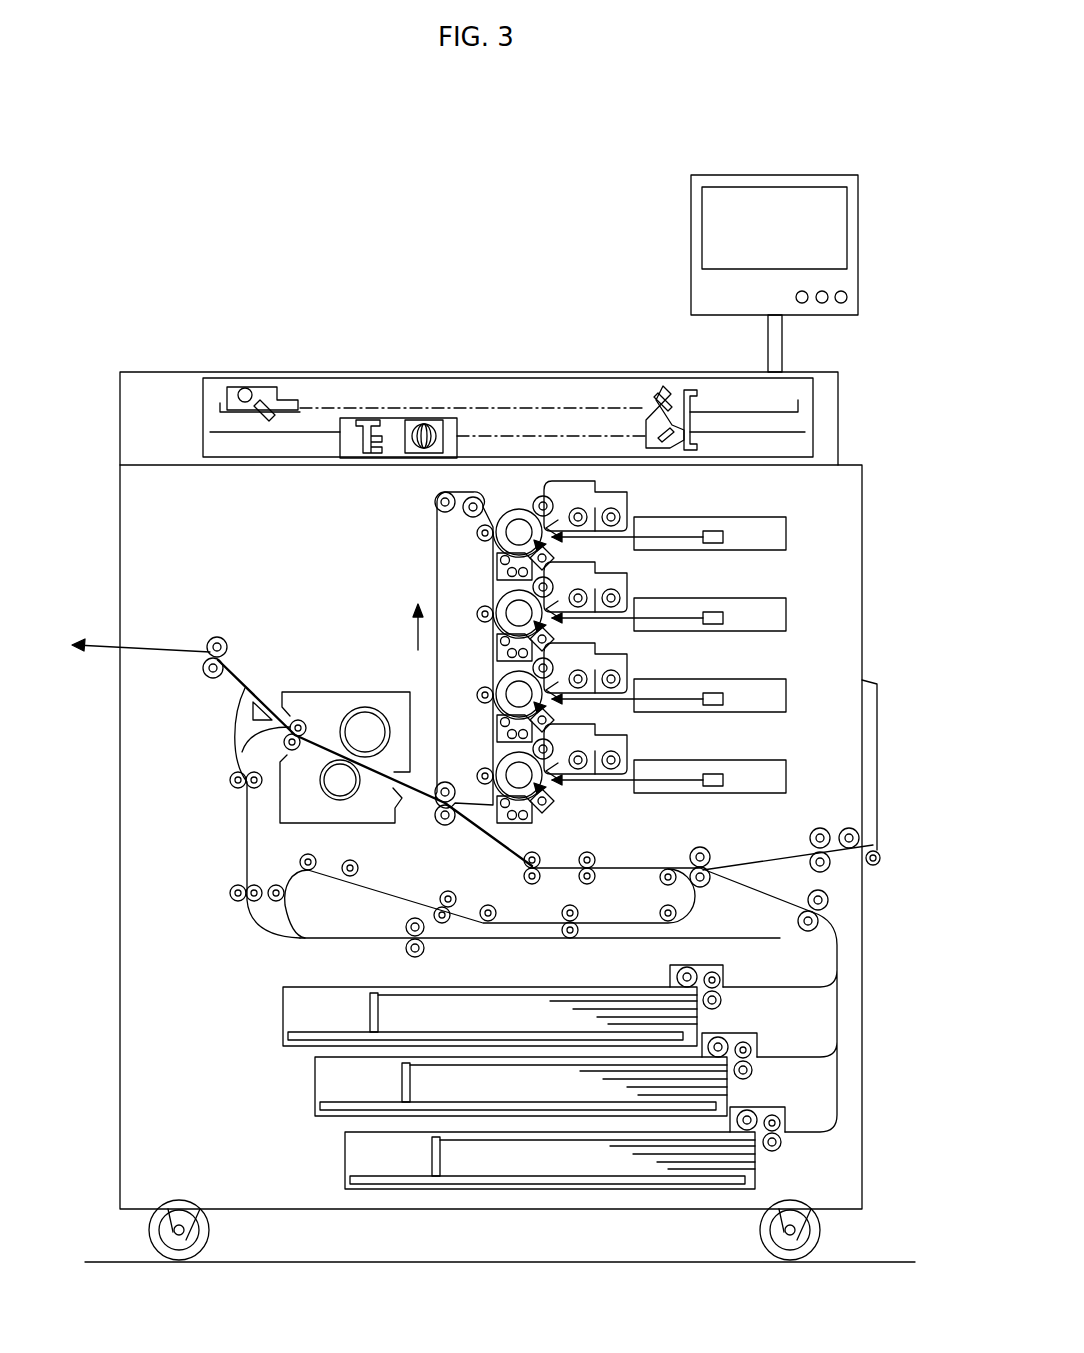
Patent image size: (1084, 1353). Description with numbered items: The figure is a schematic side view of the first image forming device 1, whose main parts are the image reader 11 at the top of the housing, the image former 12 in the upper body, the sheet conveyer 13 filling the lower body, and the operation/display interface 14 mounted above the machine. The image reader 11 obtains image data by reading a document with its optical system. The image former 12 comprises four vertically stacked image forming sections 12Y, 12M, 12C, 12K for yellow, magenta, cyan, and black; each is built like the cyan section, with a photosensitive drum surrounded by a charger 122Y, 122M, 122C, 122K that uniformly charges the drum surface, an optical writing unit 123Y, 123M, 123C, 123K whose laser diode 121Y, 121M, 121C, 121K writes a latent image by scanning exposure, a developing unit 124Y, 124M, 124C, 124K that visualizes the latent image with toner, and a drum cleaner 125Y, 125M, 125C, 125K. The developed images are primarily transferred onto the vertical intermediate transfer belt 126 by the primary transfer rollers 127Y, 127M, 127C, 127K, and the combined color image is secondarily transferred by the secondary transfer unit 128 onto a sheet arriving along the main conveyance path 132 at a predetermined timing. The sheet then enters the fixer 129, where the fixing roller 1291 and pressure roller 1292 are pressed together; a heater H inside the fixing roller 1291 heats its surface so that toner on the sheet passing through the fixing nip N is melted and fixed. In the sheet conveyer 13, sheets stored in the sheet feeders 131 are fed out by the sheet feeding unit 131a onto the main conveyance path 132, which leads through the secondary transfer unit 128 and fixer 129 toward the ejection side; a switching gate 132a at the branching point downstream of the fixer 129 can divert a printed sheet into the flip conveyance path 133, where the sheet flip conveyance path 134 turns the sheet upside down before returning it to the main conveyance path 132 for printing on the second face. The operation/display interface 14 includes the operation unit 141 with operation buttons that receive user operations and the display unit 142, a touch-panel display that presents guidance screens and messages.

The first image forming device 1 is at (597, 134).
The image reader 11 is at (813, 421).
The image former 12 is at (890, 513).
The image forming section 12Y is at (622, 512).
The image forming section 12M is at (620, 602).
The image forming section 12C is at (618, 686).
The image forming section 12K is at (646, 787).
The laser diode 121Y is at (724, 540).
The laser diode 121M is at (713, 608).
The laser diode 121C is at (711, 689).
The laser diode 121K is at (711, 770).
The charger 122Y is at (552, 558).
The charger 122M is at (587, 632).
The charger 122C is at (585, 713).
The charger 122K is at (585, 794).
The optical writing unit 123Y is at (776, 517).
The optical writing unit 123M is at (754, 599).
The optical writing unit 123C is at (752, 680).
The optical writing unit 123K is at (752, 761).
The developing unit 124Y is at (598, 492).
The developing unit 124M is at (619, 580).
The developing unit 124C is at (617, 661).
The developing unit 124K is at (617, 742).
The drum cleaner 125Y is at (505, 560).
The drum cleaner 125M is at (450, 635).
The drum cleaner 125C is at (450, 701).
The drum cleaner 125K is at (477, 830).
The intermediate transfer belt 126 is at (437, 548).
The primary transfer roller 127Y is at (515, 522).
The primary transfer roller 127M is at (510, 526).
The primary transfer roller 127C is at (461, 678).
The primary transfer roller 127K is at (554, 798).
The secondary transfer unit 128 is at (438, 822).
The fixer 129 is at (332, 731).
The fixing roller 1291 is at (357, 707).
The pressure roller 1292 is at (332, 779).
The heater H is at (352, 727).
The fixing nip N is at (353, 755).
The sheet conveyer 13 is at (476, 882).
The sheet feeder 131 is at (278, 968).
The sheet feeding unit 131a is at (725, 975).
The main conveyance path 132 is at (637, 868).
The switching gate 132a is at (247, 693).
The flip conveyance path 133 is at (245, 823).
The sheet flip conveyance path 134 is at (378, 940).
The operation/display interface 14 is at (778, 270).
The operation unit 141 is at (847, 297).
The display unit 142 is at (702, 220).